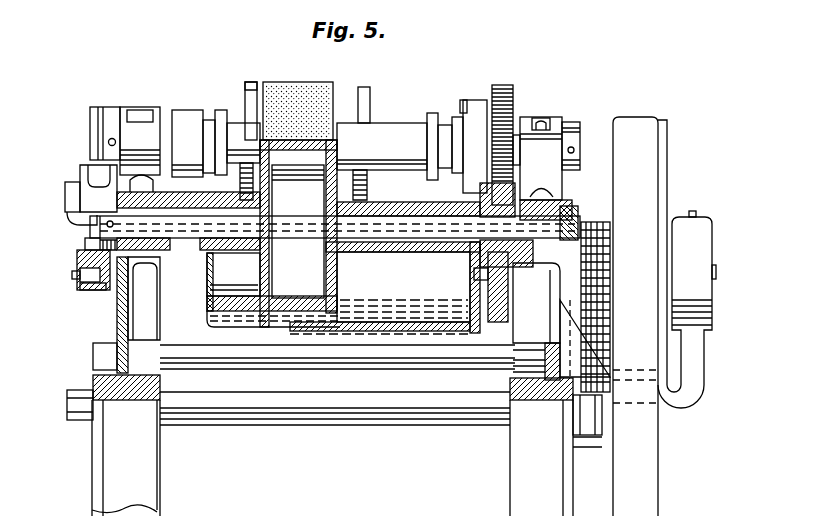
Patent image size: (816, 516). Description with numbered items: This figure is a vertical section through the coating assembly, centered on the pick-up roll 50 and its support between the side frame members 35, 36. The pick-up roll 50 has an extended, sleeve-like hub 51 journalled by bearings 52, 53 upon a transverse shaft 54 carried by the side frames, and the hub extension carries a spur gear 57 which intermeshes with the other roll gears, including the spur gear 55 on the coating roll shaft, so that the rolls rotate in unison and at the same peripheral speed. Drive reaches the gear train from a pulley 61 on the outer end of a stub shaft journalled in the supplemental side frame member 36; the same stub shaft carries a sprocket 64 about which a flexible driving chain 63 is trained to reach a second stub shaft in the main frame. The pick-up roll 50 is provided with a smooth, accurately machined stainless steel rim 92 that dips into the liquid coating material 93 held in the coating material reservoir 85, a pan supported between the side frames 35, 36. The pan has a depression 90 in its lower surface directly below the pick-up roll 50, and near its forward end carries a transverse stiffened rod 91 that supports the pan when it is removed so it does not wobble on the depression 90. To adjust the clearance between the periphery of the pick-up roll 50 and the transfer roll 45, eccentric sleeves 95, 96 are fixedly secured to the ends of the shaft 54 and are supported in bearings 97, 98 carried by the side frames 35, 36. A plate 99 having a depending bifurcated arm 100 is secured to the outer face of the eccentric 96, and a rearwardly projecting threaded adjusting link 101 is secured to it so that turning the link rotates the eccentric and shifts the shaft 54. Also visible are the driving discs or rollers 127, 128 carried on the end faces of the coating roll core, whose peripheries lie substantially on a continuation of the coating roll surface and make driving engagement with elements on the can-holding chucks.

The side frame member 35 is at (117, 298).
The supplemental side frame member 36 is at (549, 289).
The transfer roll 45 is at (293, 140).
The pick-up roll 50 is at (336, 158).
The sleeve-like hub 51 is at (388, 250).
The bearing 52 is at (512, 192).
The bearing 53 is at (187, 192).
The transverse shaft 54 is at (213, 236).
The spur gear 55 is at (511, 93).
The spur gear 57 is at (500, 322).
The pulley 61 is at (667, 186).
The flexible driving chain 63 is at (595, 312).
The sprocket 64 is at (602, 240).
The coating material reservoir 85 is at (207, 308).
The depression 90 is at (221, 320).
The transverse stiffened rod 91 is at (388, 331).
The stainless steel rim 92 is at (246, 115).
The liquid coating material 93 is at (228, 305).
The eccentric sleeve 95 is at (572, 205).
The eccentric sleeve 96 is at (128, 182).
The bearing 97 is at (565, 188).
The bearing 98 is at (142, 262).
The plate 99 is at (88, 245).
The bifurcated arm 100 is at (82, 267).
The threaded adjusting link 101 is at (97, 289).
The driving disc 127 is at (369, 97).
The driving disc 128 is at (246, 95).